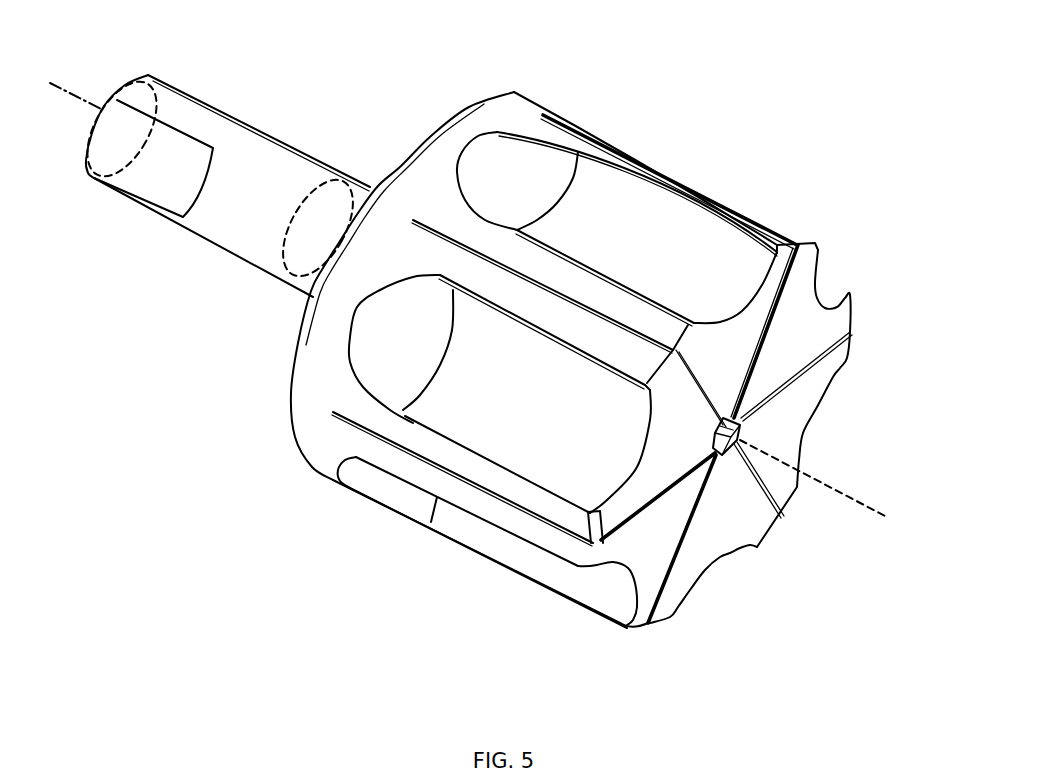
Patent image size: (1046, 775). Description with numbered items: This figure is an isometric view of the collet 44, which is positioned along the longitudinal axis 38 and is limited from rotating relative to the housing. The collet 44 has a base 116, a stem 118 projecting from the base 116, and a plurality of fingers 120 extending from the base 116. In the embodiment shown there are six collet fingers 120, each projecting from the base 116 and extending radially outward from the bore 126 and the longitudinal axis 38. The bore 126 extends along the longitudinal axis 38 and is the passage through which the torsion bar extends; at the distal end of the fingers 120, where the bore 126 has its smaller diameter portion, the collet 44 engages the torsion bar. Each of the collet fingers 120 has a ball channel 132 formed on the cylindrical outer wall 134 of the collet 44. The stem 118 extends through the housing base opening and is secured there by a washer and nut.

The longitudinal axis 38 is at (83, 97).
The collet 44 is at (623, 353).
The base 116 is at (520, 107).
The stem 118 is at (253, 143).
The fingers 120 is at (805, 353).
The bore 126 is at (742, 426).
The ball channel 132 is at (610, 587).
The cylindrical outer wall 134 is at (500, 517).